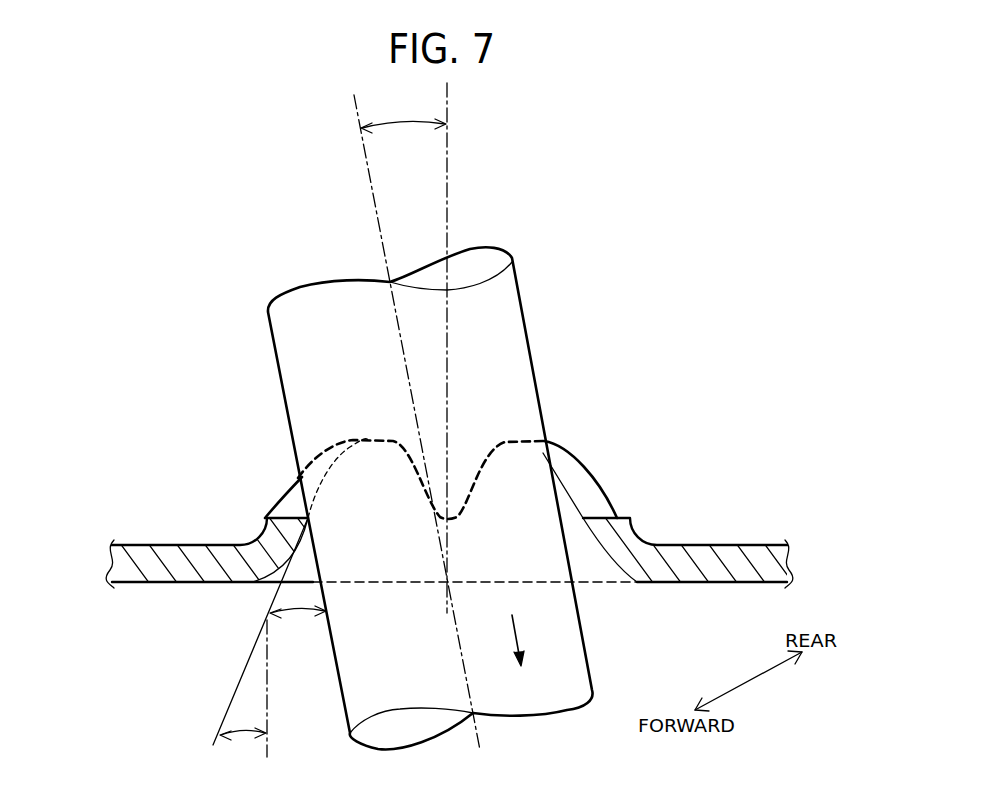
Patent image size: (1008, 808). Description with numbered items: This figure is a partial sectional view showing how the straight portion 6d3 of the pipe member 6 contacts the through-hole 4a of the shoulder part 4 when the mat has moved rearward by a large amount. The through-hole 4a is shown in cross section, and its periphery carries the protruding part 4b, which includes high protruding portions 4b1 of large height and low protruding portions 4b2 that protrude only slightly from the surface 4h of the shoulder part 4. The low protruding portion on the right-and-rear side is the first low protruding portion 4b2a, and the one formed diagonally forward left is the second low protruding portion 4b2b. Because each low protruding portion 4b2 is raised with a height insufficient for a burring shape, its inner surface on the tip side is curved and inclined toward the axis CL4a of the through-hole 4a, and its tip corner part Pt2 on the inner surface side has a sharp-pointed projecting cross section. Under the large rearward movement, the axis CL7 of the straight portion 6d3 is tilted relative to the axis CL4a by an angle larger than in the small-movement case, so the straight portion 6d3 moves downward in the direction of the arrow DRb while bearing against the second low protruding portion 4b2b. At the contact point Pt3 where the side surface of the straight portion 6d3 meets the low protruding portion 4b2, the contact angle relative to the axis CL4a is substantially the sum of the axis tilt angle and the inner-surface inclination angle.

The shoulder part 4 is at (461, 524).
The surface of the shoulder part 4h is at (727, 545).
The through-hole 4a is at (598, 366).
The protruding part 4b is at (672, 488).
The high protruding portion 4b1 is at (370, 440).
The low protruding portion 4b2 is at (199, 479).
The first low protruding portion 4b2a is at (603, 514).
The second low protruding portion 4b2b is at (280, 516).
The pipe member 6 is at (467, 491).
The straight portion 6d3 is at (519, 300).
The tip corner part Pt2 is at (301, 513).
The contact point Pt3 is at (313, 518).
The axis of the through-hole CL4a is at (448, 182).
The axis of the straight portion CL7 is at (371, 183).
The downward movement direction DRb is at (538, 640).